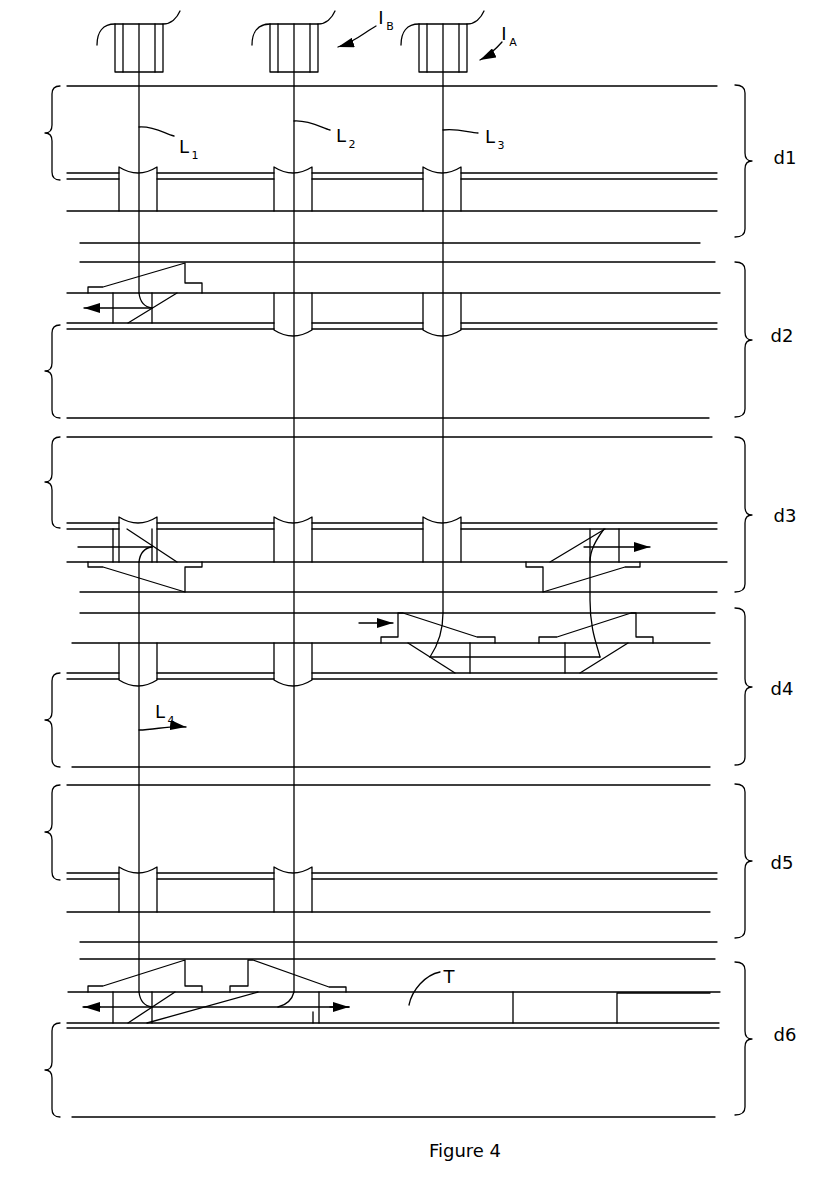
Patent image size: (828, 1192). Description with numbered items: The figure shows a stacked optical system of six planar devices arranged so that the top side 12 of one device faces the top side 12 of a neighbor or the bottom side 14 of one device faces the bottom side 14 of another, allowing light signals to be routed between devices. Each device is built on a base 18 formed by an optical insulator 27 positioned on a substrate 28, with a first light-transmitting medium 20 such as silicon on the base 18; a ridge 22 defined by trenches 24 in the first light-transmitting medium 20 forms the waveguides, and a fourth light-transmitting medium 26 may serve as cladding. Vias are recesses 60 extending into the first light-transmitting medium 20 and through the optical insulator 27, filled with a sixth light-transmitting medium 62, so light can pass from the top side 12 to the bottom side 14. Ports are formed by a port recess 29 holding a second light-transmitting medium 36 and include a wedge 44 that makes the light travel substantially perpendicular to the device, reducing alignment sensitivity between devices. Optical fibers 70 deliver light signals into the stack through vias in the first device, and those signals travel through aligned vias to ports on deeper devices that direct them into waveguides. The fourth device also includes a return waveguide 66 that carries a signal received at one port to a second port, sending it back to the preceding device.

The top side 12 is at (389, 260).
The bottom side 14 is at (669, 86).
The base 18 is at (38, 601).
The first light-transmitting medium 20 is at (92, 197).
The ridge 22 is at (78, 292).
The trenches 24 is at (553, 1020).
The fourth light-transmitting medium 26 is at (638, 266).
The optical insulator 27 is at (585, 173).
The substrate 28 is at (545, 98).
The port recess 29 is at (171, 320).
The second light-transmitting medium 36 is at (123, 315).
The wedge 44 is at (201, 269).
The recess 60 is at (273, 196).
The sixth light-transmitting medium 62 is at (147, 193).
The return waveguide 66 is at (511, 679).
The optical fibers 70 is at (115, 60).